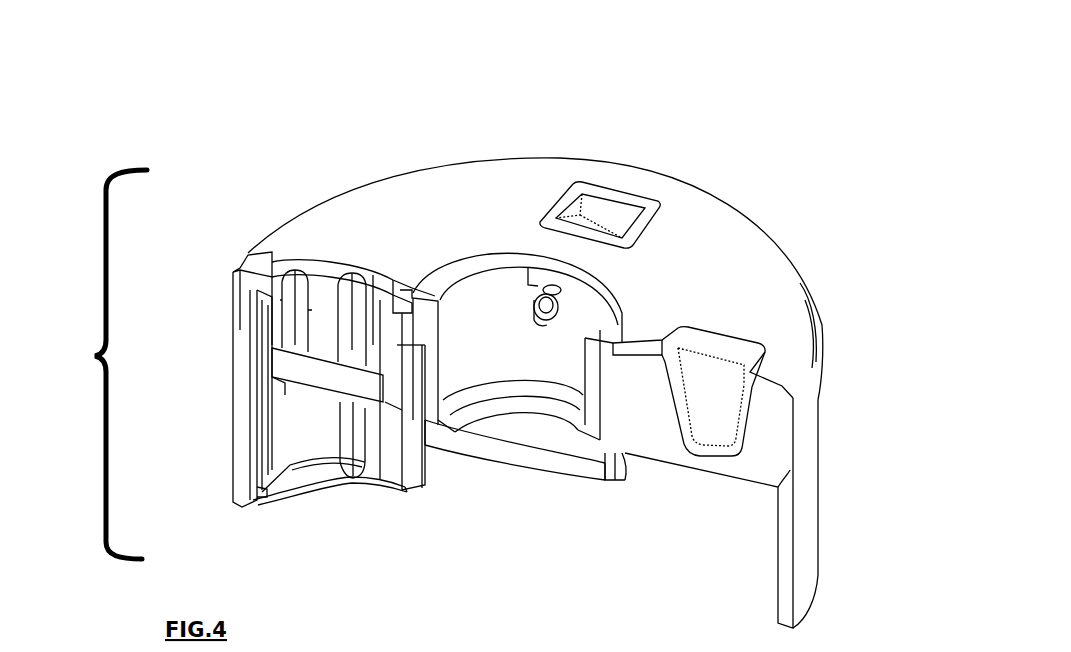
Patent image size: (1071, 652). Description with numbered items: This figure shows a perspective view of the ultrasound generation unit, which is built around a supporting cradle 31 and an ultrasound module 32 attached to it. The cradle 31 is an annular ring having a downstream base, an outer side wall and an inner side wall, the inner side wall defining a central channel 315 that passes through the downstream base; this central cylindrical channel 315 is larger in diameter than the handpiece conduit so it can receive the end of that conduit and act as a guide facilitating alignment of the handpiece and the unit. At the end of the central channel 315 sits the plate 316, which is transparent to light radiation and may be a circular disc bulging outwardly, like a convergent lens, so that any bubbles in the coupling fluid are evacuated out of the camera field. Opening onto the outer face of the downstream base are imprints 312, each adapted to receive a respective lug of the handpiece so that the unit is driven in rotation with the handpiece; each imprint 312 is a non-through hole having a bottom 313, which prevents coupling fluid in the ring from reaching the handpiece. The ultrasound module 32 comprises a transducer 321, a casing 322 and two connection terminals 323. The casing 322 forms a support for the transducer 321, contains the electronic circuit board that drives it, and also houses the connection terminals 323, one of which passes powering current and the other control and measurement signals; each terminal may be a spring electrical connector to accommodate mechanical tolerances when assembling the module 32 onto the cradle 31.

The supporting cradle 31 is at (782, 442).
The imprint 312 is at (600, 208).
The bottom 313 is at (698, 467).
The central channel 315 is at (500, 320).
The plate 316 is at (523, 455).
The ultrasound module 32 is at (84, 364).
The transducer 321 is at (313, 482).
The casing 322 is at (258, 428).
The connection terminal 323 is at (352, 310).